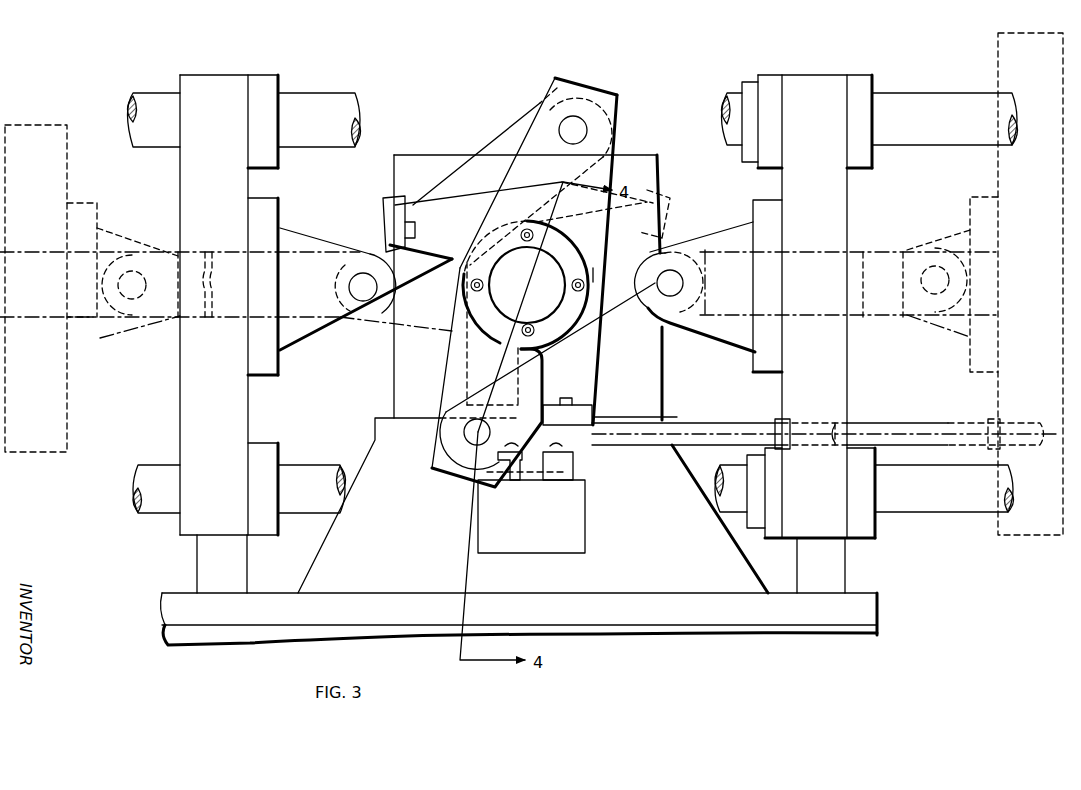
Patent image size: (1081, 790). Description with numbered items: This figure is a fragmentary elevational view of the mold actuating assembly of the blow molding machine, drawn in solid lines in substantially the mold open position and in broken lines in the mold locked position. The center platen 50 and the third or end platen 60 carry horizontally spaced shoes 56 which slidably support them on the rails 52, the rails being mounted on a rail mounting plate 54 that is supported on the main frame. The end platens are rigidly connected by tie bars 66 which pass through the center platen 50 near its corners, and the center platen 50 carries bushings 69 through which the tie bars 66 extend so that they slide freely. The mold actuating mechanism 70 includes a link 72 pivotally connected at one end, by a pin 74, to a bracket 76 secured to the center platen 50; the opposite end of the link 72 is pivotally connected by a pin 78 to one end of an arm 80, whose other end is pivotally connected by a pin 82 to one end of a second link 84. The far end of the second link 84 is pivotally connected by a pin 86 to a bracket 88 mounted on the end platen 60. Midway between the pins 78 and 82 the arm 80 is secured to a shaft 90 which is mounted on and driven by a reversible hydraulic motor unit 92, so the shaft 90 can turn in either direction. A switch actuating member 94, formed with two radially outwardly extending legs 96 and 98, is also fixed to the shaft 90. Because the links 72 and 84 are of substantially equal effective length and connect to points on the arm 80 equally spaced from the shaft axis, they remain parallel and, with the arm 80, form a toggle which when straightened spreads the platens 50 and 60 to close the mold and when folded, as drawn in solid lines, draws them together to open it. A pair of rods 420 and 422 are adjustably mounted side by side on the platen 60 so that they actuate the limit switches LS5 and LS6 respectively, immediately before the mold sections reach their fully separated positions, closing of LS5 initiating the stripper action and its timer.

The center platen 50 is at (70, 422).
The rails 52 is at (258, 604).
The rail mounting plate 54 is at (240, 636).
The shoes 56 is at (238, 565).
The third platen 60 is at (835, 380).
The tie bars 66 is at (150, 93).
The bushings 69 is at (268, 78).
The mold actuating mechanism 70 is at (640, 142).
The link 72 is at (484, 168).
The pin 74 is at (364, 300).
The bracket 76 is at (302, 248).
The pin 78 is at (576, 127).
The arm 80 is at (558, 86).
The pin 82 is at (470, 440).
The second link 84 is at (616, 374).
The pin 86 is at (676, 280).
The bracket 88 is at (737, 334).
The shaft 90 is at (510, 314).
The hydraulic motor unit 92 is at (405, 360).
The switch actuating member 94 is at (580, 275).
The leg 96 is at (590, 402).
The leg 98 is at (436, 213).
The rod 420 is at (795, 426).
The rod 422 is at (720, 413).
The limit switch LS5 is at (512, 480).
The limit switch LS6 is at (553, 480).